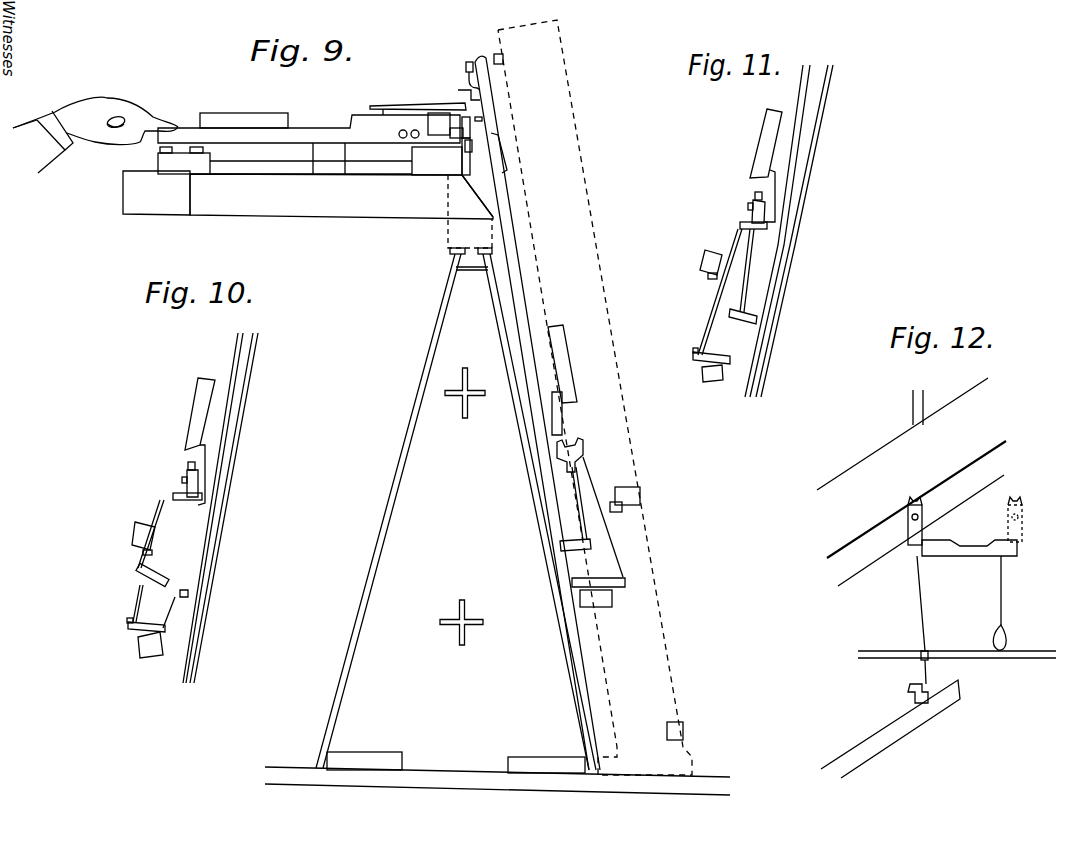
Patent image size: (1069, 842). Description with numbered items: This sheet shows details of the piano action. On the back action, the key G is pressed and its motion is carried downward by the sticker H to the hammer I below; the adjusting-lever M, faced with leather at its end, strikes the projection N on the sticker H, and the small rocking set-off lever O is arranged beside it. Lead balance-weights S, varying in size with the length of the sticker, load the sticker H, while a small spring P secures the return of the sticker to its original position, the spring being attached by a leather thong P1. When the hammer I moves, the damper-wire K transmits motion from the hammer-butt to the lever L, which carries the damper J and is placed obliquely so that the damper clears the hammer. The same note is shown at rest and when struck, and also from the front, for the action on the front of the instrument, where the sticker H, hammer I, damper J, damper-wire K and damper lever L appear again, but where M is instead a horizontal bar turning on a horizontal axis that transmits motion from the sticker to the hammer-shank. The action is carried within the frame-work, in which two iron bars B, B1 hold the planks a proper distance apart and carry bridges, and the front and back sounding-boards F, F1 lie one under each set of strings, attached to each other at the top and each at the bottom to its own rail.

In FIG. 9, the key G is at (309, 127).
In FIG. 9, the lead balance-weights S is at (408, 126).
In FIG. 9, the set-off lever O is at (460, 125).
In FIG. 9, the adjusting-lever M is at (418, 98).
In FIG. 10, the adjusting-lever M is at (173, 496).
In FIG. 11, the adjusting-lever M is at (740, 225).
In FIG. 12, the adjusting-lever M is at (962, 541).
In FIG. 9, the projection N is at (469, 81).
In FIG. 9, the spring P is at (502, 153).
In FIG. 9, the leather thong P1 is at (477, 196).
In FIG. 9, the sticker H is at (537, 412).
In FIG. 10, the sticker H is at (238, 352).
In FIG. 11, the sticker H is at (805, 95).
In FIG. 12, the sticker H is at (906, 407).
In FIG. 9, the front sounding-board F is at (388, 511).
In FIG. 10, the front sounding-board F is at (218, 491).
In FIG. 11, the front sounding-board F is at (781, 251).
In FIG. 9, the back sounding-board F1 is at (539, 512).
In FIG. 9, the bar B is at (465, 393).
In FIG. 9, the bar B1 is at (463, 624).
In FIG. 9, the lever carrying the damper L is at (592, 537).
In FIG. 10, the lever carrying the damper L is at (146, 631).
In FIG. 11, the lever carrying the damper L is at (711, 359).
In FIG. 12, the lever carrying the damper L is at (908, 686).
In FIG. 9, the damper-wire K is at (611, 517).
In FIG. 10, the damper-wire K is at (146, 603).
In FIG. 11, the damper-wire K is at (720, 292).
In FIG. 12, the damper-wire K is at (926, 620).
In FIG. 10, the hammer I is at (152, 543).
In FIG. 11, the hammer I is at (743, 276).
In FIG. 12, the hammer I is at (1004, 603).
In FIG. 10, the damper J is at (175, 600).
In FIG. 12, the damper J is at (927, 646).